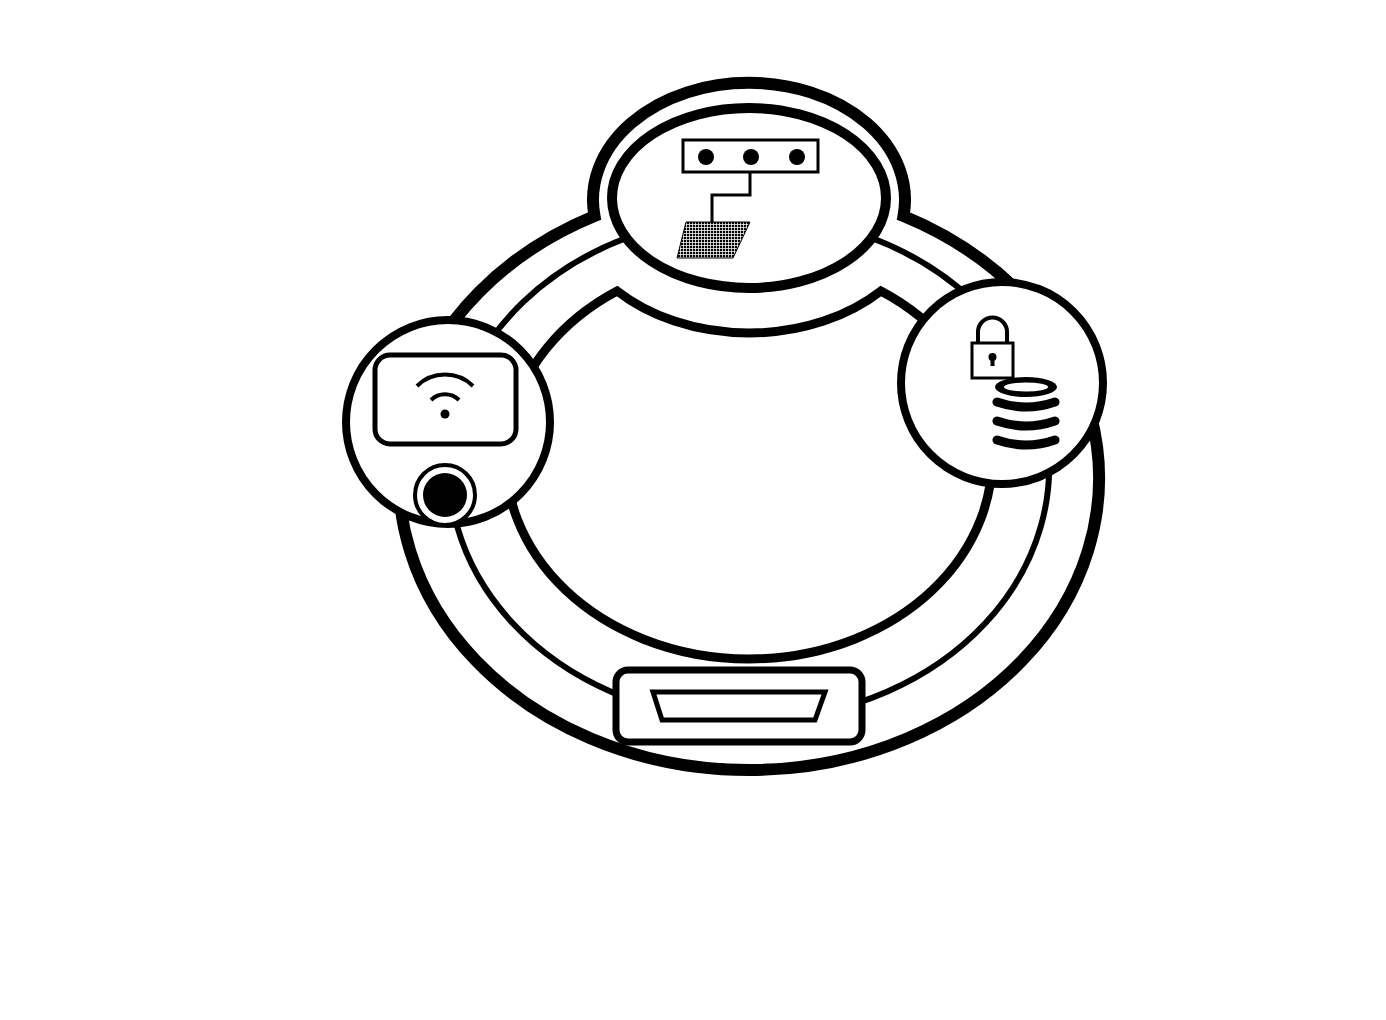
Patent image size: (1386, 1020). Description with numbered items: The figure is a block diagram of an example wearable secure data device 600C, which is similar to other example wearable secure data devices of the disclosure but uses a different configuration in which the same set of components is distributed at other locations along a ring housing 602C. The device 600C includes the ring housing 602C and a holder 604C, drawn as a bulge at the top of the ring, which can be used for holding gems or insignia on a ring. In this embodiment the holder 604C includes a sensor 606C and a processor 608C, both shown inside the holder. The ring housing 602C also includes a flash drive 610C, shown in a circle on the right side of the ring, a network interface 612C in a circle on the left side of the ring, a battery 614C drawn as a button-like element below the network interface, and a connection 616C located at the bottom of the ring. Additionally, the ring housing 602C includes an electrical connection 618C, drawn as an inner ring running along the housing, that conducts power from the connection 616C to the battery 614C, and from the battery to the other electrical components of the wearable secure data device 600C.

The wearable secure data device 600C is at (182, 106).
The ring housing 602C is at (547, 228).
The holder 604C is at (897, 193).
The sensor 606C is at (820, 172).
The processor 608C is at (753, 233).
The flash drive 610C is at (1065, 333).
The network interface 612C is at (387, 377).
The battery 614C is at (415, 486).
The connection 616C is at (637, 727).
The electrical connection 618C is at (487, 582).